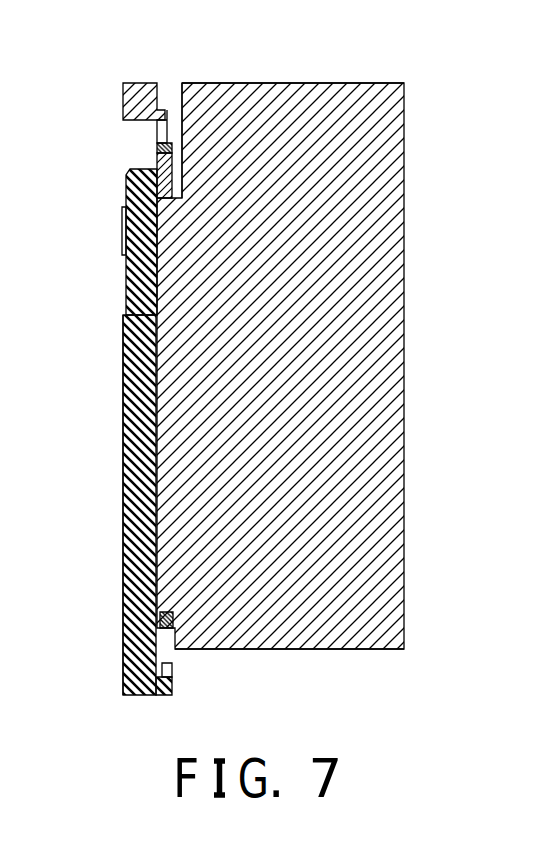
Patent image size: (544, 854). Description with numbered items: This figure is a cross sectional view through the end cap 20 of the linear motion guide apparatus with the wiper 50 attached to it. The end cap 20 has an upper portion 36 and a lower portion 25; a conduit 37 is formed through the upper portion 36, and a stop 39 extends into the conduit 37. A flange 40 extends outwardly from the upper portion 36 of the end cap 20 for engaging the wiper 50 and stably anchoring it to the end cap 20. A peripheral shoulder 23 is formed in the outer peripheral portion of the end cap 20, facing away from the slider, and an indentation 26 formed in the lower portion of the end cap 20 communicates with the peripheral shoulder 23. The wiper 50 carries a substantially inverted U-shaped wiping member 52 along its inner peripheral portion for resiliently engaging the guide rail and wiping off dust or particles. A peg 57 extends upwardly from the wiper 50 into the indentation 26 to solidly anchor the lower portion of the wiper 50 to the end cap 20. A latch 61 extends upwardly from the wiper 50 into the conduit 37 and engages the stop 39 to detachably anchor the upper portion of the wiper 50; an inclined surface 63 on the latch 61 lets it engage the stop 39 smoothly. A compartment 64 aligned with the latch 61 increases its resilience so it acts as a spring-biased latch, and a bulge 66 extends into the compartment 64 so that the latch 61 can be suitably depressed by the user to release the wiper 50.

The end cap 20 is at (385, 194).
The upper portion 36 is at (362, 82).
The lower portion 25 is at (337, 650).
The conduit 37 is at (180, 95).
The flange 40 is at (123, 100).
The stop 39 is at (161, 110).
The inclined surface 63 is at (158, 148).
The latch 61 is at (172, 146).
The compartment 64 is at (127, 210).
The bulge 66 is at (125, 235).
The wiping member 52 is at (135, 535).
The wiper 50 is at (123, 406).
The indentation 26 is at (163, 618).
The peripheral shoulder 23 is at (168, 645).
The peg 57 is at (176, 668).